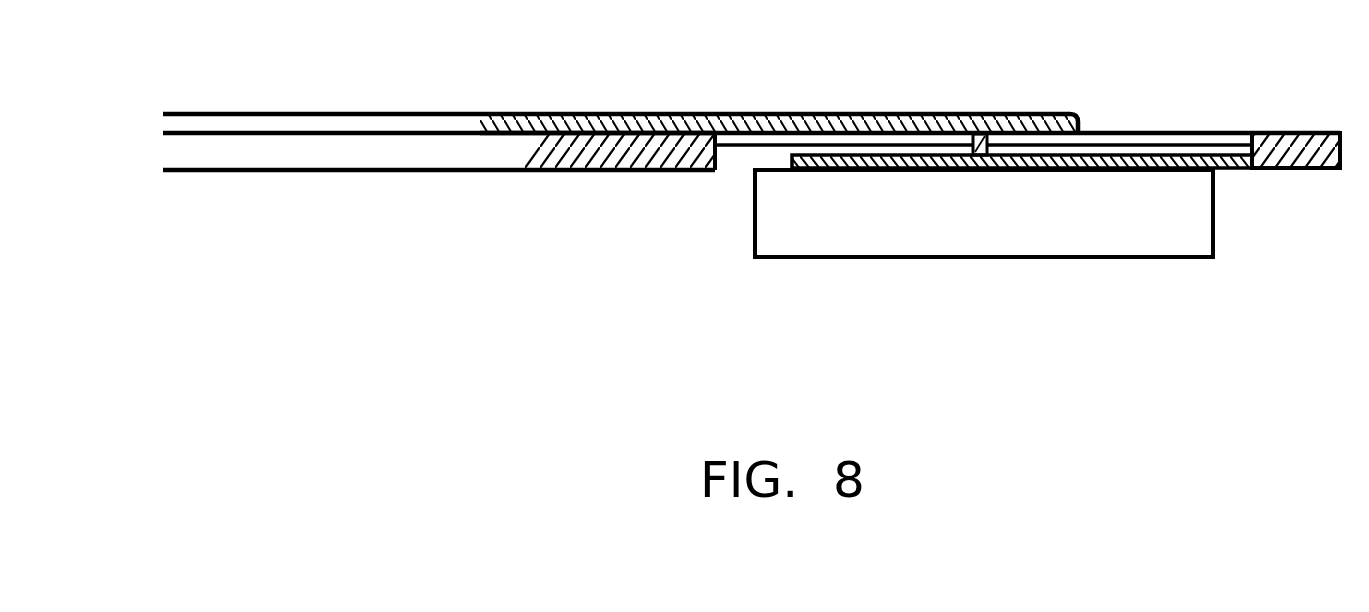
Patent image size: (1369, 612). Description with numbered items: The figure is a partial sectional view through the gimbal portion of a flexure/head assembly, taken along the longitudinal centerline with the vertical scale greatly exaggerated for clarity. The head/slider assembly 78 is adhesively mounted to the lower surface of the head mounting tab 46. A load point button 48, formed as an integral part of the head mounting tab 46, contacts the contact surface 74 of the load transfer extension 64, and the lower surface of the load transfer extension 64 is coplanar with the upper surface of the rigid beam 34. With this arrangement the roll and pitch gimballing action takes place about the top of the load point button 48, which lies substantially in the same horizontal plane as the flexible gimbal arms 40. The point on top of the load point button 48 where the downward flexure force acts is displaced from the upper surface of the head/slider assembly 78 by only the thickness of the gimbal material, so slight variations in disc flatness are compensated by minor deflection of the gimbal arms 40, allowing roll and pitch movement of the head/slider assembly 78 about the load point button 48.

The rigid beam 34 is at (470, 152).
The load transfer extension 64 is at (653, 113).
The contact surface 74 is at (913, 134).
The load point button 48 is at (985, 135).
The head mounting tab 46 is at (1070, 160).
The flexible gimbal arms 40 is at (1177, 132).
The head/slider assembly 78 is at (1195, 213).